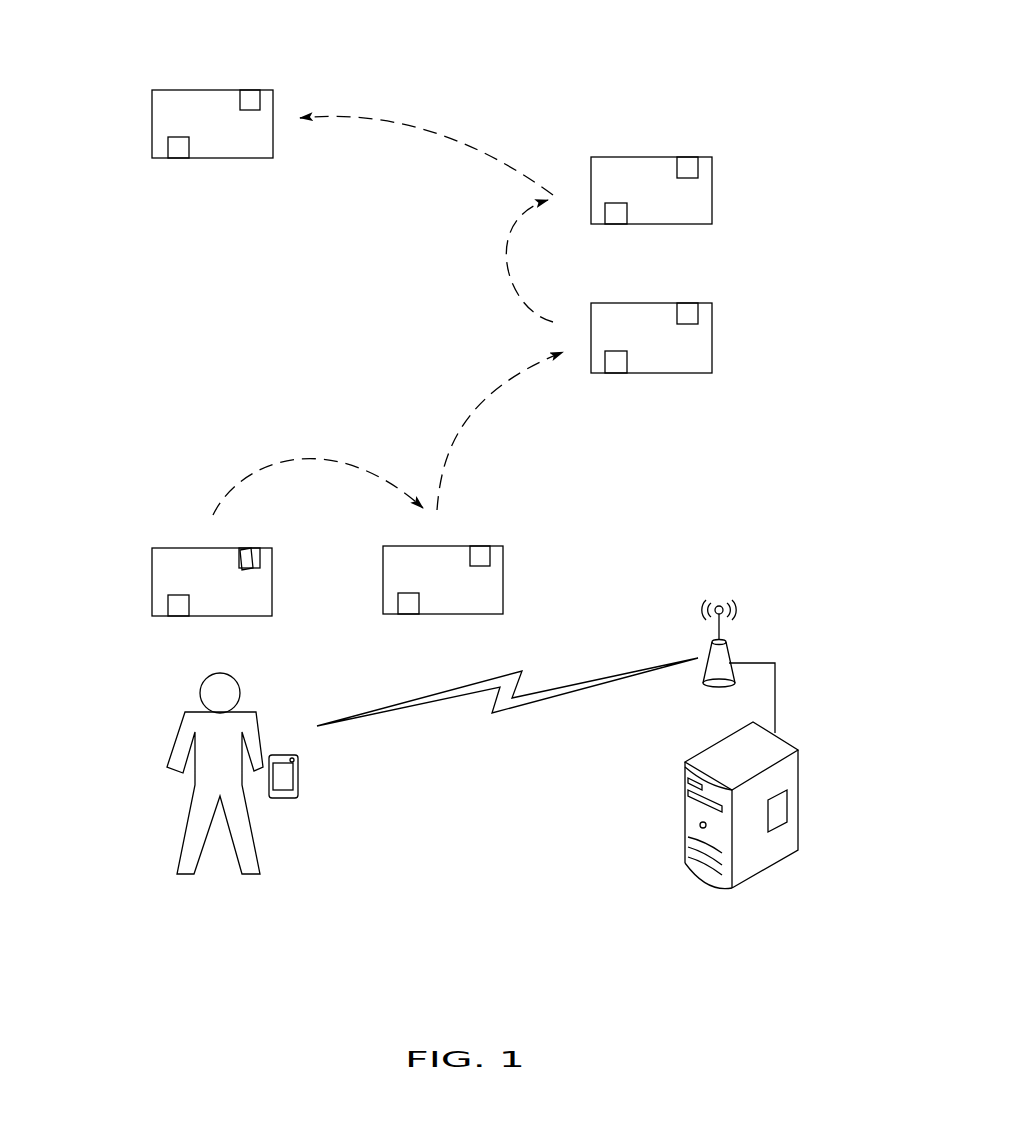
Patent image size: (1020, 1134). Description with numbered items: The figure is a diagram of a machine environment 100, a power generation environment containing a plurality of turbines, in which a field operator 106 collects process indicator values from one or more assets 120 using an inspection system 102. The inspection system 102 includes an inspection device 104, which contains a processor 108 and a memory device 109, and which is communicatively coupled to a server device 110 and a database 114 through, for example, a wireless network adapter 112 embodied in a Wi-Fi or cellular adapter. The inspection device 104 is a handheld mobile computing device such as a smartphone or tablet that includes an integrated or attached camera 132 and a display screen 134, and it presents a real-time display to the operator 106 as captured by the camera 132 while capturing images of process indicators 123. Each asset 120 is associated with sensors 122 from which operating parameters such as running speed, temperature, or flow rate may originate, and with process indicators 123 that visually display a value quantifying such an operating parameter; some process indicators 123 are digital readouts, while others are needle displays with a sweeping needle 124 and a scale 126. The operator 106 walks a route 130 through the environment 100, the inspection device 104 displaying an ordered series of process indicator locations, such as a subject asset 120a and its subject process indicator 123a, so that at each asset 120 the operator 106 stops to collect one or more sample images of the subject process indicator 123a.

The machine environment 100 is at (555, 58).
The inspection system 102 is at (360, 916).
The inspection device 104 is at (285, 798).
The field operator 106 is at (254, 712).
The processor 108 is at (273, 752).
The memory device 109 is at (276, 800).
The server device 110 is at (767, 868).
The wireless network adapter 112 is at (732, 645).
The database 114 is at (778, 811).
The asset 120 is at (201, 158).
The subject asset 120a is at (152, 556).
The sensor 122 is at (180, 134).
The process indicator 123 is at (250, 99).
The subject process indicator 123a is at (236, 549).
The sweeping needle 124 is at (245, 558).
The scale 126 is at (247, 552).
The route 130 is at (347, 453).
The camera 132 is at (296, 759).
The display screen 134 is at (297, 778).